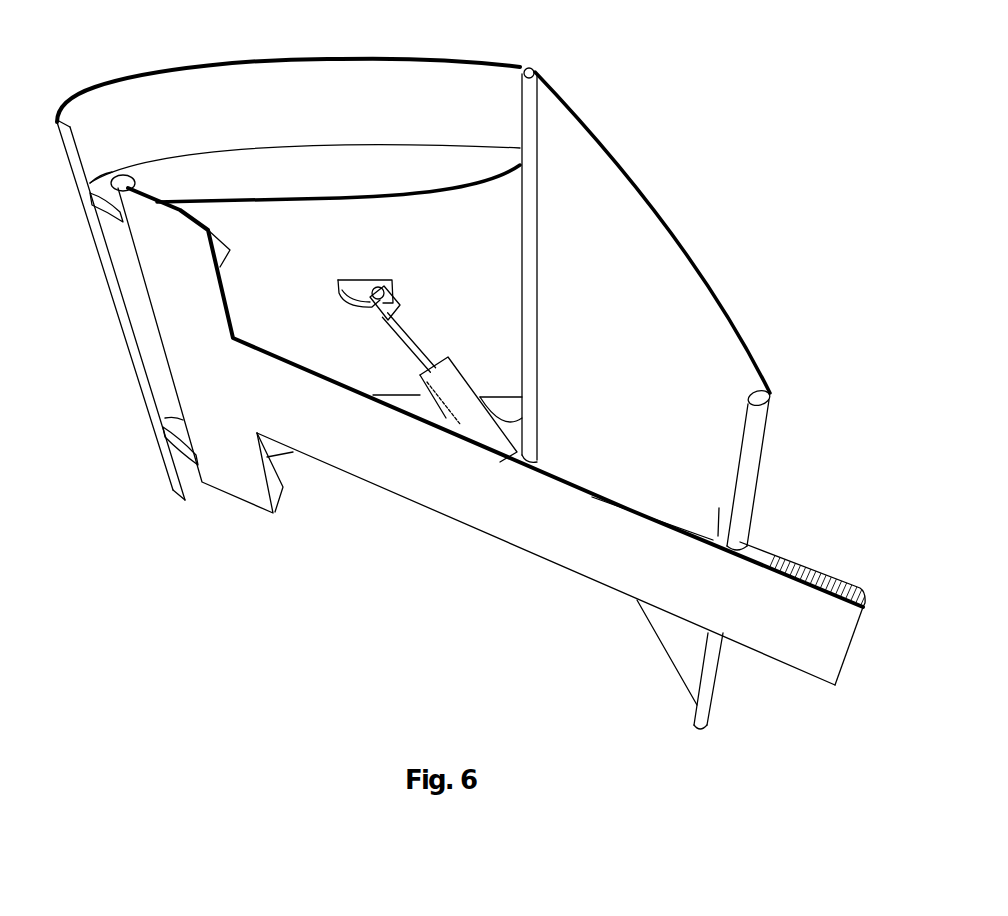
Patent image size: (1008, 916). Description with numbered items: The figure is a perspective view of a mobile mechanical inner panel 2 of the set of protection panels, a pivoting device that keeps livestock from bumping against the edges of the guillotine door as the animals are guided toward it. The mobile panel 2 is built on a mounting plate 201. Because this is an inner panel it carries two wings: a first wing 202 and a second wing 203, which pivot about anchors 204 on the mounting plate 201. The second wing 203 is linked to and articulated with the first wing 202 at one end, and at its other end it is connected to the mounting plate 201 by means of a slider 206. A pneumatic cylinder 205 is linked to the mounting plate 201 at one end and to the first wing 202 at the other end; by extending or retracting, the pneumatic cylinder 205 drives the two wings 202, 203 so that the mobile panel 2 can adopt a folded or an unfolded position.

The mobile panel 2 is at (742, 206).
The mounting plate 201 is at (510, 527).
The first wing 202 is at (218, 97).
The second wing 203 is at (595, 177).
The anchors 204 is at (113, 222).
The pneumatic cylinder 205 is at (457, 410).
The slider 206 is at (767, 545).